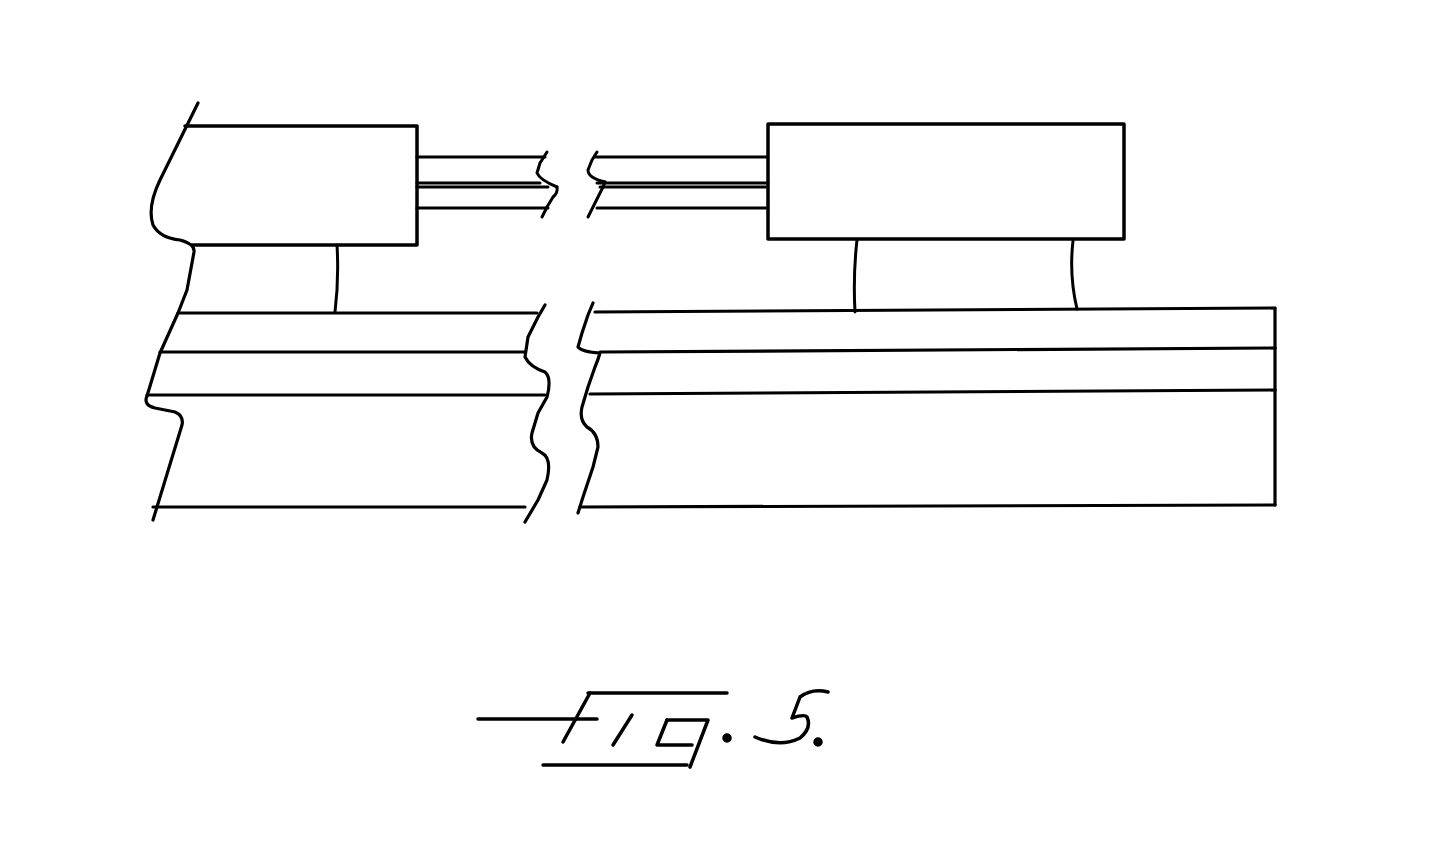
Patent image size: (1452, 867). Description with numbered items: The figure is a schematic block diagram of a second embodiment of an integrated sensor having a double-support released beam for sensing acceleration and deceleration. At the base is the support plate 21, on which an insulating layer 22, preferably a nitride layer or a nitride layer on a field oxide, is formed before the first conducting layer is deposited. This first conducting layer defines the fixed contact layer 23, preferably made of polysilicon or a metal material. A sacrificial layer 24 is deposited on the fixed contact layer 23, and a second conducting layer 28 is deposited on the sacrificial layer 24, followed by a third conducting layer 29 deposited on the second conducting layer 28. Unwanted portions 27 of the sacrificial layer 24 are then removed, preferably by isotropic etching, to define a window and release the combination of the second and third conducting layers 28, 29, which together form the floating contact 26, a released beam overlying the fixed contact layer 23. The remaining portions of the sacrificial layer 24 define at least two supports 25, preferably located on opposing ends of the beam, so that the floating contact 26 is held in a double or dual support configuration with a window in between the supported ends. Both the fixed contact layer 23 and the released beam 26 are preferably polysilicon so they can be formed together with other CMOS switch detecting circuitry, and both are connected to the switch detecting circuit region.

The support plate 21 is at (1267, 463).
The insulating layer 22 is at (1421, 320).
The fixed contact layer 23 is at (1388, 222).
The sacrificial layer 24 is at (1262, 198).
The supports 25 is at (320, 250).
The floating contact 26 is at (492, 150).
The unwanted portions of the sacrificial layer 27 is at (683, 228).
The second conducting layer 28 is at (533, 232).
The third conducting layer 29 is at (507, 54).